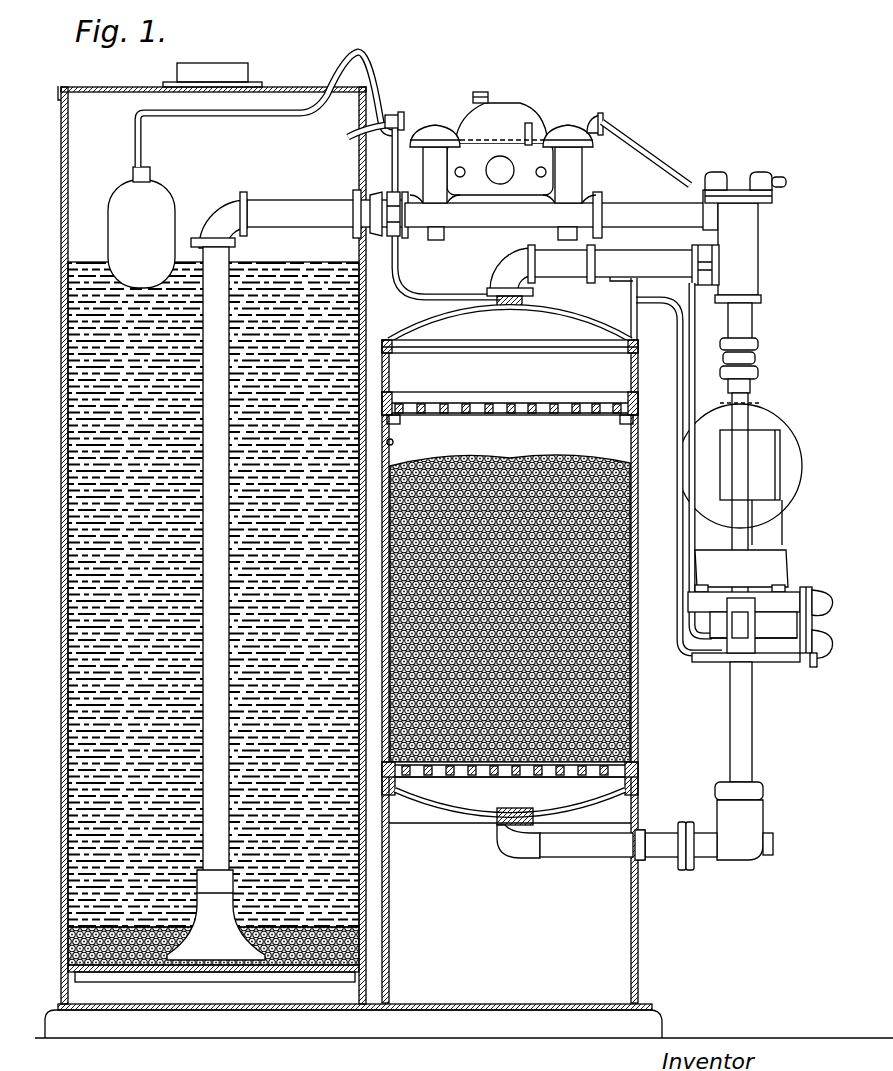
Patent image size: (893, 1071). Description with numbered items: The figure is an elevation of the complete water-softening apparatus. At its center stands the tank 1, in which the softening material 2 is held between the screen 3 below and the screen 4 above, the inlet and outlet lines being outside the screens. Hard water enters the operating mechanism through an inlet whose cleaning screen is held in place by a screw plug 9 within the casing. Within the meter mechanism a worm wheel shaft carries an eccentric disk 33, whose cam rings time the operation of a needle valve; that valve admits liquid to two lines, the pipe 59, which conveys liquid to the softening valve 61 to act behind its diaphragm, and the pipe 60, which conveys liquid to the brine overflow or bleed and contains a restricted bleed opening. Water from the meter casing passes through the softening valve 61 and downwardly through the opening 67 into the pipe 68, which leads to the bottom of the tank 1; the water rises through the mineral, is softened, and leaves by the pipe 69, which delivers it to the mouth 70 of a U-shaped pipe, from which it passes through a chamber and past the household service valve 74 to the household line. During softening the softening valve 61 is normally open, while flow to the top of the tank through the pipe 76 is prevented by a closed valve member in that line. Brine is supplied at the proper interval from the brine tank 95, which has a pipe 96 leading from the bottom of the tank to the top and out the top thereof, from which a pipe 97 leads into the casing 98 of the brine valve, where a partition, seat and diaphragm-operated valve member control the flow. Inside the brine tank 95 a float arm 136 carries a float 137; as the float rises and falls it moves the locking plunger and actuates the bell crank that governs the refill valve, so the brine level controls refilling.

The tank 1 is at (470, 988).
The softening material 2 is at (640, 715).
The screen 3 is at (480, 780).
The screen 4 is at (548, 410).
The screw plug 9 is at (812, 592).
The eccentric disk 33 is at (780, 460).
The pipe 59 is at (678, 568).
The pipe 60 is at (680, 510).
The softening valve 61 is at (785, 630).
The opening 67 is at (735, 640).
The pipe 68 is at (755, 752).
The pipe 69 is at (663, 262).
The mouth of U-shaped pipe 70 is at (712, 265).
The household service valve 74 is at (745, 241).
The pipe 76 is at (740, 415).
The brine tank 95 is at (110, 108).
The pipe 96 is at (220, 307).
The pipe 97 is at (343, 213).
The casing 98 is at (535, 179).
The float arm 136 is at (277, 117).
The float 137 is at (118, 202).